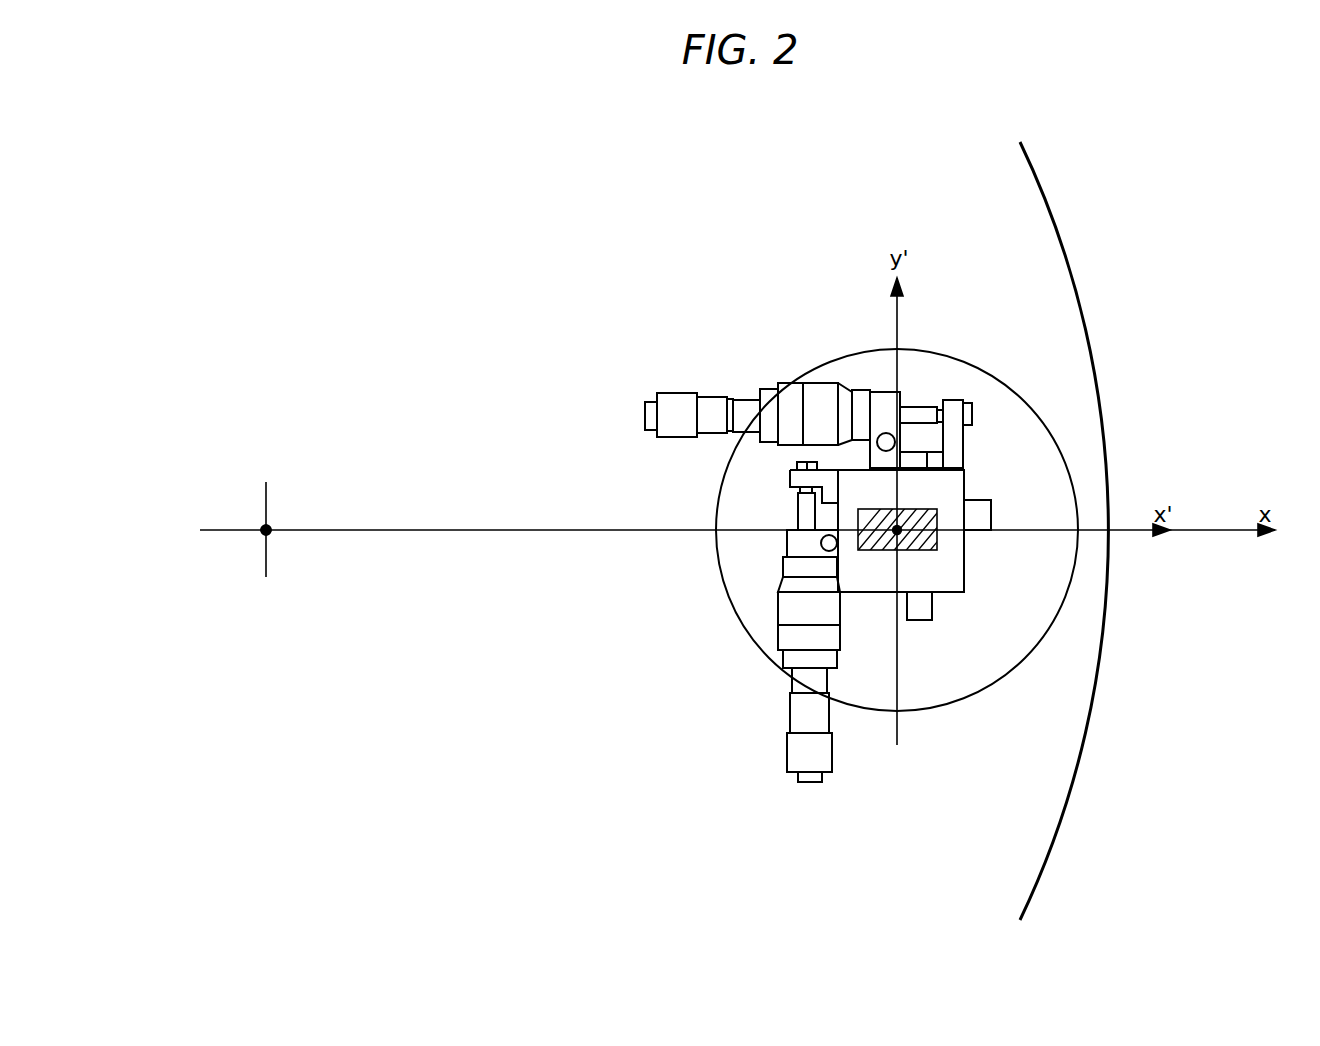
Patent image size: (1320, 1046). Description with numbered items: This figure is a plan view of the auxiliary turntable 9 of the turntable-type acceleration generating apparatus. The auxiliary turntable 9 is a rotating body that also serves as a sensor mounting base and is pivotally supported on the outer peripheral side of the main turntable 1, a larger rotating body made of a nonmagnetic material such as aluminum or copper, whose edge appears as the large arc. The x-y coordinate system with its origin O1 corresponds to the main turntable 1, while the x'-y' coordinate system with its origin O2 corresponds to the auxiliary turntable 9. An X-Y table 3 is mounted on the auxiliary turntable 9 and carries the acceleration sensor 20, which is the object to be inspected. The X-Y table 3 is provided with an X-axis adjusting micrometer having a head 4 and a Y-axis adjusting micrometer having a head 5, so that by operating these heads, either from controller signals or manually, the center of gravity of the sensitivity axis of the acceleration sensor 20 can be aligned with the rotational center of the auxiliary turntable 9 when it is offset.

The main turntable 1 is at (1042, 248).
The X-Y table 3 is at (955, 495).
The X-axis adjusting micrometer head 4 is at (676, 393).
The Y-axis adjusting micrometer head 5 is at (787, 755).
The auxiliary turntable 9 is at (1015, 420).
The acceleration sensor 20 is at (938, 535).
The origin O1 is at (269, 527).
The origin O2 is at (897, 531).